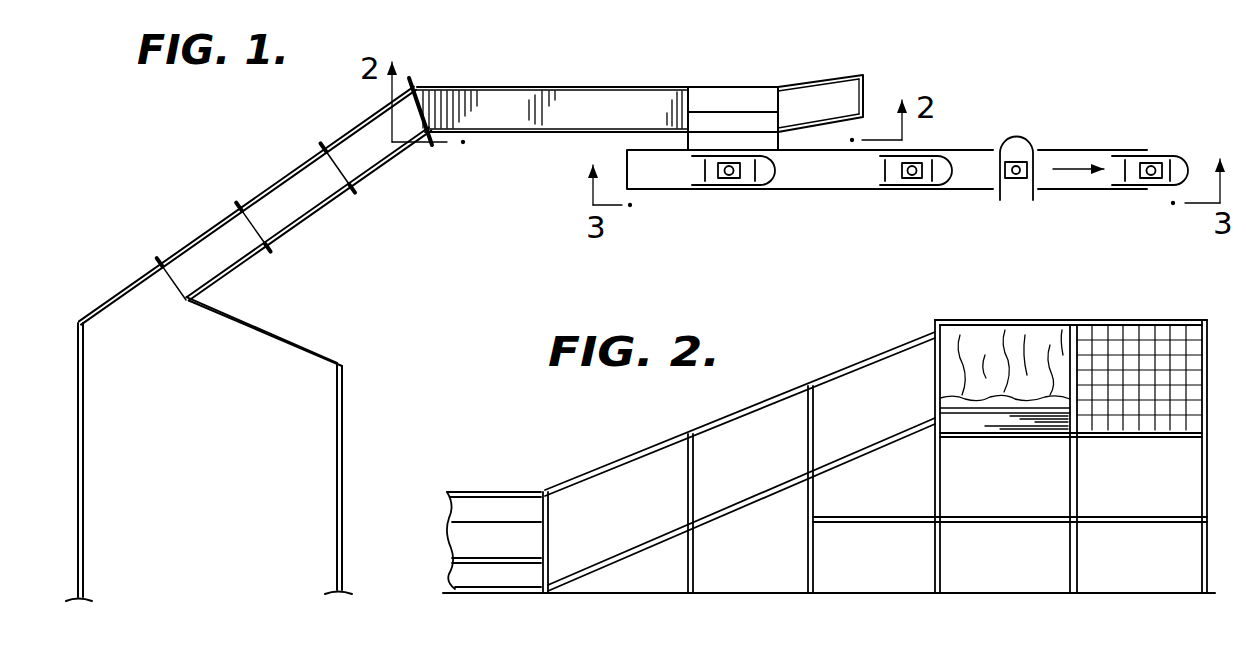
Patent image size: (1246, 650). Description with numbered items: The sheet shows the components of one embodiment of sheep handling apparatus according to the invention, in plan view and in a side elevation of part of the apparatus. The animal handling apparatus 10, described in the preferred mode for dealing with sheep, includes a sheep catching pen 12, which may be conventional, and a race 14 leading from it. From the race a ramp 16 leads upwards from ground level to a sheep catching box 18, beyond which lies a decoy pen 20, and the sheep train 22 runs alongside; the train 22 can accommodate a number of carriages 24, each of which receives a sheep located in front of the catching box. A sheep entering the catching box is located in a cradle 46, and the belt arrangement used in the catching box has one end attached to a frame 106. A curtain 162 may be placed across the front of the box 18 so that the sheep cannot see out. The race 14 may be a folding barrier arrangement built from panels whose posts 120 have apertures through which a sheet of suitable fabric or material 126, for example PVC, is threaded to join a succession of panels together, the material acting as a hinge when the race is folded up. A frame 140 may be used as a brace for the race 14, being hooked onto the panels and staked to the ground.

In FIG. 1, the animal handling apparatus 10 is at (887, 220).
In FIG. 1, the sheep catching pen 12 is at (215, 456).
In FIG. 1, the race 14 is at (313, 220).
In FIG. 1, the ramp 16 is at (552, 72).
In FIG. 2, the ramp 16 is at (740, 443).
In FIG. 1, the sheep catching box 18 is at (733, 81).
In FIG. 2, the sheep catching box 18 is at (1003, 342).
In FIG. 1, the decoy pen 20 is at (820, 71).
In FIG. 2, the decoy pen 20 is at (1139, 342).
In FIG. 1, the sheep train 22 is at (847, 192).
In FIG. 1, the carriage 24 is at (1163, 152).
In FIG. 1, the cradle 46 is at (1023, 135).
In FIG. 2, the frame 106 is at (943, 489).
In FIG. 2, the post 120 is at (553, 527).
In FIG. 2, the sheet of material 126 is at (472, 507).
In FIG. 1, the frame 140 is at (310, 146).
In FIG. 2, the frame 140 is at (520, 484).
In FIG. 2, the curtain 162 is at (968, 333).